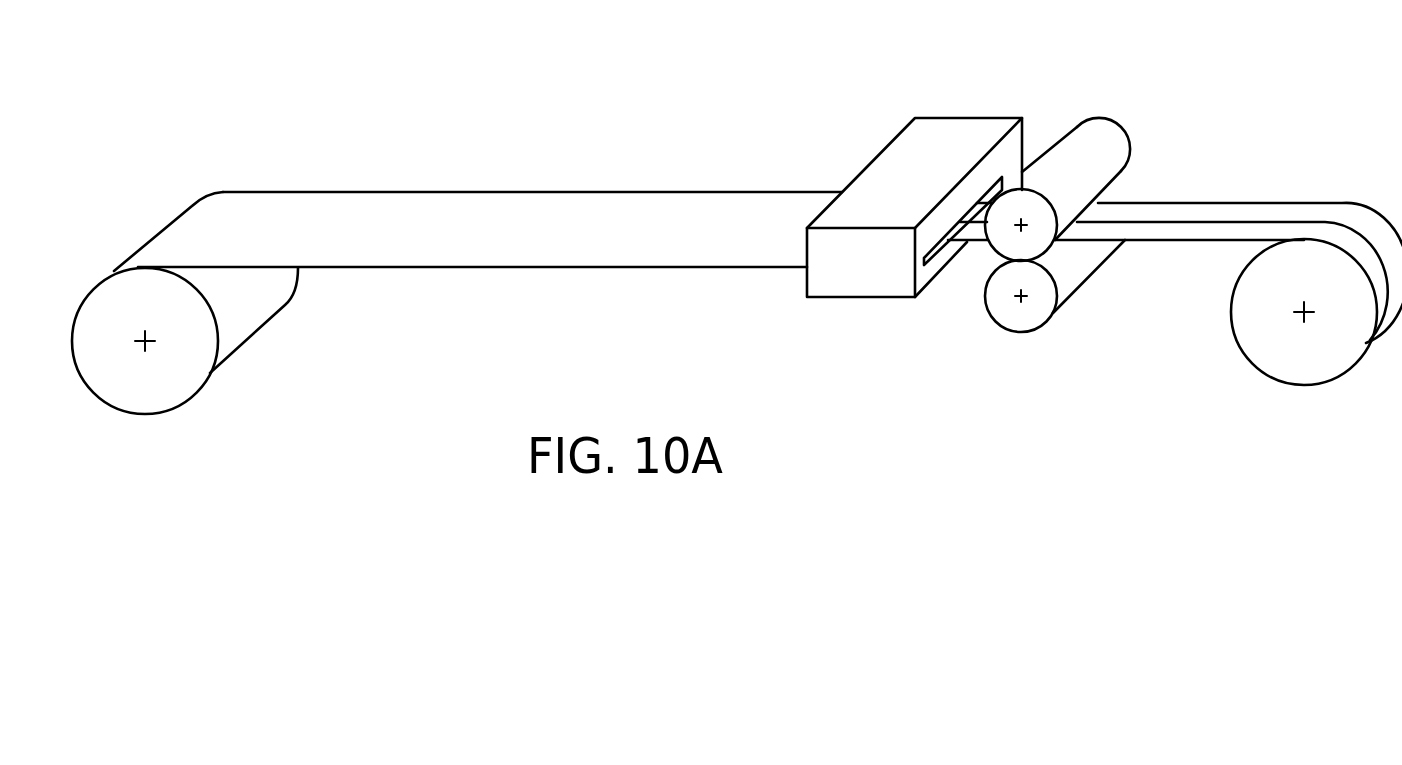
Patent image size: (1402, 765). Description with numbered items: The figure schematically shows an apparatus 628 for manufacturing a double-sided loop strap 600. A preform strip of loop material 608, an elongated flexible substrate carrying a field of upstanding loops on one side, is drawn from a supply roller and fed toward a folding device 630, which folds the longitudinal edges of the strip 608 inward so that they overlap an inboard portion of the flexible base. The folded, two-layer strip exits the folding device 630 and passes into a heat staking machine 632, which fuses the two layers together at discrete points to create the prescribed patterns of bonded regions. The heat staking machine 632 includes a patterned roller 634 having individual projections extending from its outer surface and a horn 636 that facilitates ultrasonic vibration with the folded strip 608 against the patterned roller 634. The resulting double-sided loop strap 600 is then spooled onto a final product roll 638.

The double-sided loop strap 600 is at (1208, 242).
The preform strip of loop material 608 is at (363, 268).
The apparatus 628 is at (1162, 89).
The folding device 630 is at (868, 282).
The heat staking machine 632 is at (1086, 360).
The patterned roller 634 is at (1020, 331).
The horn 636 is at (1000, 243).
The final product roll 638 is at (1281, 367).